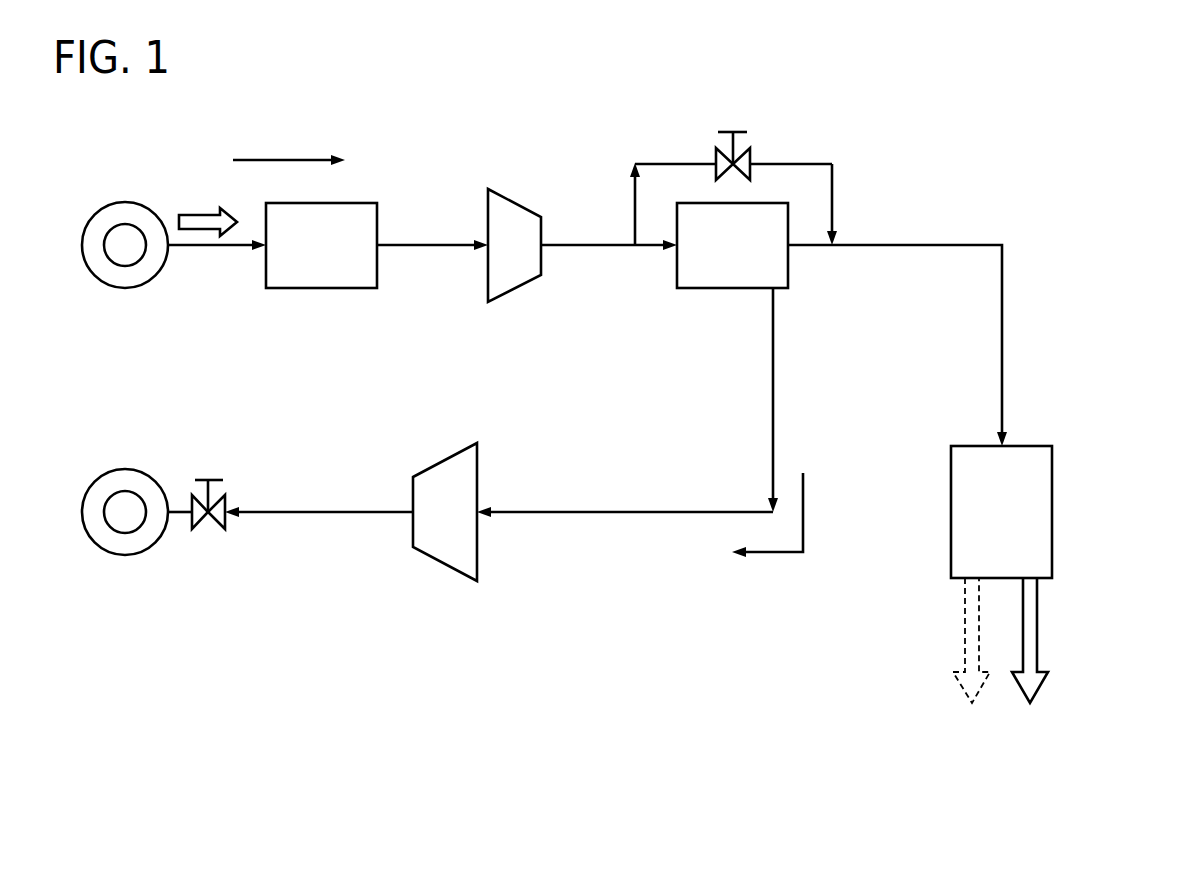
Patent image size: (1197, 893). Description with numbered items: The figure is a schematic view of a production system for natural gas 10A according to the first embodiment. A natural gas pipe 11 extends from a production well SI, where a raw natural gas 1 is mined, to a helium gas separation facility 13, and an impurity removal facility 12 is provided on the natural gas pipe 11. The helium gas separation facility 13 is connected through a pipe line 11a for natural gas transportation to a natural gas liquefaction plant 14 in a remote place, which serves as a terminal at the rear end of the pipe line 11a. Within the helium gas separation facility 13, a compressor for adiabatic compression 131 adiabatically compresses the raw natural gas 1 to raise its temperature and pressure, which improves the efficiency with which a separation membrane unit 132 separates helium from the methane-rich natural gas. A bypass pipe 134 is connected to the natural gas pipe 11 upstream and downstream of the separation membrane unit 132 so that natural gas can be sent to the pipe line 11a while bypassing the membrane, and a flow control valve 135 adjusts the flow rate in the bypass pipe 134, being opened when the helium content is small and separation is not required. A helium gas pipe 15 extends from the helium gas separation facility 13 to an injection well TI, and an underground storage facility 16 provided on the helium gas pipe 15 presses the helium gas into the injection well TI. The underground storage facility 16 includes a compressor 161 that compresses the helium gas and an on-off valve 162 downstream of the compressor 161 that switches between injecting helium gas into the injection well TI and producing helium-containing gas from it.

The production system for natural gas 10A is at (1167, 230).
The raw natural gas 1 is at (195, 213).
The natural gas pipe 11 is at (432, 247).
The pipe line 11a is at (933, 247).
The impurity removal facility 12 is at (322, 288).
The helium gas separation facility 13 is at (600, 188).
The compressor for adiabatic compression 131 is at (517, 288).
The separation membrane unit 132 is at (789, 273).
The bypass pipe 134 is at (832, 183).
The flow control valve 135 is at (750, 155).
The natural gas liquefaction plant 14 is at (1052, 510).
The helium gas pipe 15 is at (774, 412).
The underground storage facility 16 is at (319, 566).
The compressor 161 is at (438, 562).
The on-off valve 162 is at (215, 530).
The production well SI is at (123, 288).
The injection well TI is at (123, 555).